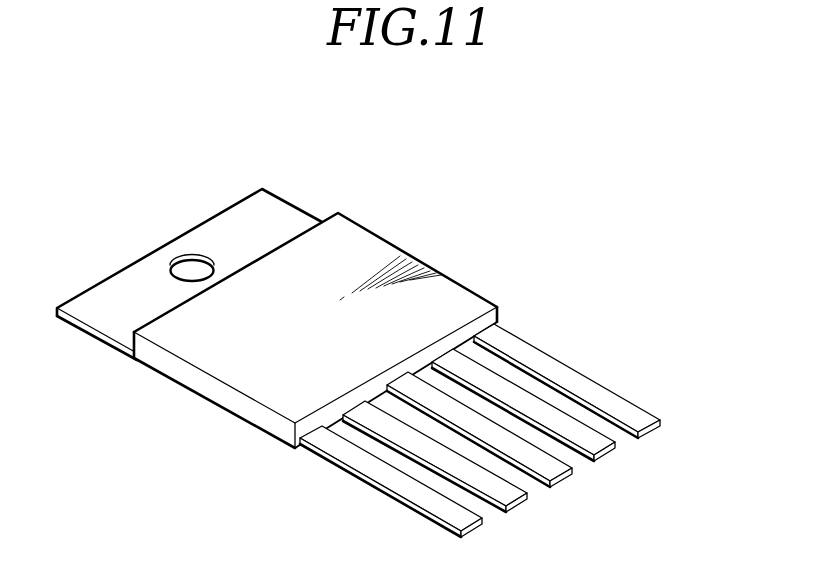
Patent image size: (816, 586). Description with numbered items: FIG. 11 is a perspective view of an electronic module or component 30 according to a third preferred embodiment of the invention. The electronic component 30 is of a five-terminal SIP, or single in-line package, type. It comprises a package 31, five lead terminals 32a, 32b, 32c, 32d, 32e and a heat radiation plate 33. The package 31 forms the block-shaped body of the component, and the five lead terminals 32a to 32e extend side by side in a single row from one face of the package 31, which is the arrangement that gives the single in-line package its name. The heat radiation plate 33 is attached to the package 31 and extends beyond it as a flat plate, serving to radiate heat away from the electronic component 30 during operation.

The electronic component 30 is at (571, 178).
The package 31 is at (220, 404).
The lead terminal 32a is at (397, 495).
The lead terminal 32b is at (522, 497).
The lead terminal 32c is at (565, 473).
The lead terminal 32d is at (608, 448).
The lead terminal 32e is at (654, 425).
The heat radiation plate 33 is at (215, 230).